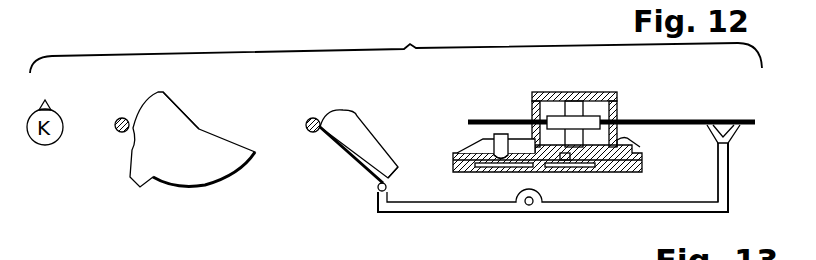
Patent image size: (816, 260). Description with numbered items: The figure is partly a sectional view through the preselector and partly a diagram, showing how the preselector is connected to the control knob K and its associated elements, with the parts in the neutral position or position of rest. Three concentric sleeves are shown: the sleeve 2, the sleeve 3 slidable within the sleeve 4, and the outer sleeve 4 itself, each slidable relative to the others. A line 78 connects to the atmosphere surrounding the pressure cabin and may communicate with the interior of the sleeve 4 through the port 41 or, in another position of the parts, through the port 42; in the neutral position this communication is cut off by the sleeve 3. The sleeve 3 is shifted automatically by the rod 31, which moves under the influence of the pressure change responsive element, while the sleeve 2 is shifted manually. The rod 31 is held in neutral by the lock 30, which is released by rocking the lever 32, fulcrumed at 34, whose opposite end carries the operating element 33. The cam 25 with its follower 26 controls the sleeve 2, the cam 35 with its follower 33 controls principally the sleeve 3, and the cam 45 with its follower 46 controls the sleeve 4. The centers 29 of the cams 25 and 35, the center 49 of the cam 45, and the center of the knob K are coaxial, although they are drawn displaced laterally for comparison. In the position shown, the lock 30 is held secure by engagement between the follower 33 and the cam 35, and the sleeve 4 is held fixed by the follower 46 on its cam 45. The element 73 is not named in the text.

The sleeve 2 is at (465, 173).
The sleeve 3 is at (595, 95).
The sleeve 4 is at (460, 150).
The cam 25 is at (330, 108).
The follower 26 is at (307, 121).
The center 29 is at (338, 127).
The lock 30 is at (735, 138).
The rod 31 is at (680, 118).
The lever 32 is at (726, 192).
The operating element 33 is at (380, 191).
The fulcrum 34 is at (534, 205).
The cam 35 is at (393, 173).
The port 41 is at (598, 172).
The port 42 is at (494, 168).
The cam 45 is at (207, 177).
The follower 46 is at (120, 132).
The center 49 is at (195, 125).
The bolt end 73 is at (503, 173).
The line 78 is at (566, 168).